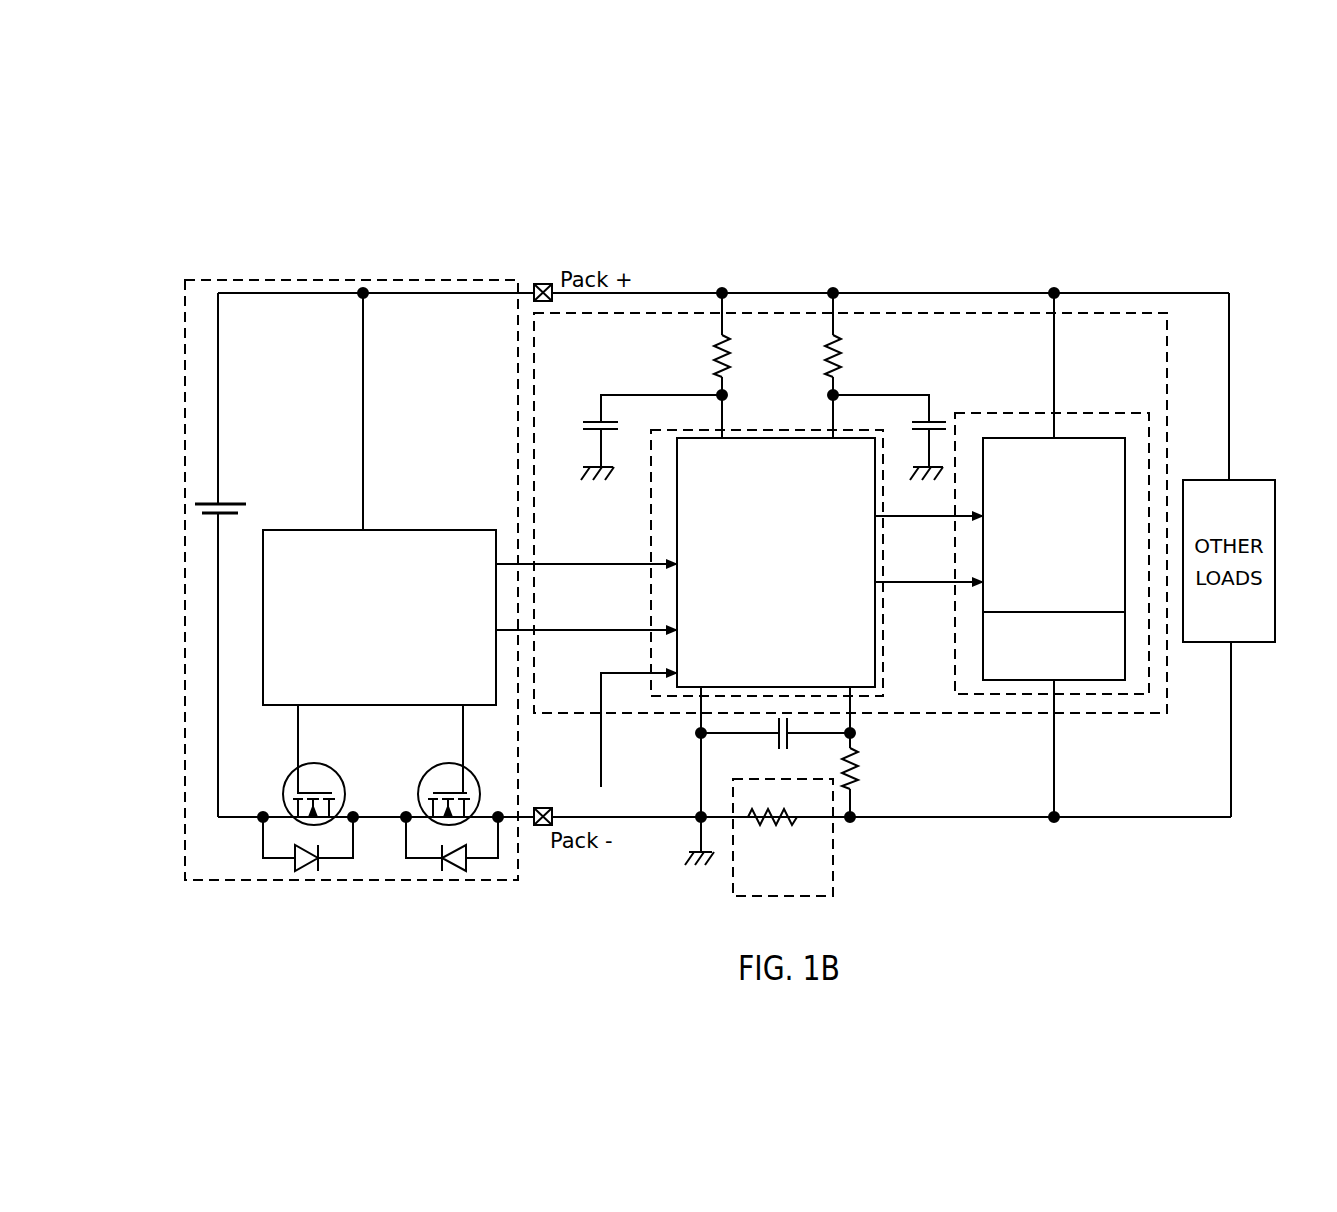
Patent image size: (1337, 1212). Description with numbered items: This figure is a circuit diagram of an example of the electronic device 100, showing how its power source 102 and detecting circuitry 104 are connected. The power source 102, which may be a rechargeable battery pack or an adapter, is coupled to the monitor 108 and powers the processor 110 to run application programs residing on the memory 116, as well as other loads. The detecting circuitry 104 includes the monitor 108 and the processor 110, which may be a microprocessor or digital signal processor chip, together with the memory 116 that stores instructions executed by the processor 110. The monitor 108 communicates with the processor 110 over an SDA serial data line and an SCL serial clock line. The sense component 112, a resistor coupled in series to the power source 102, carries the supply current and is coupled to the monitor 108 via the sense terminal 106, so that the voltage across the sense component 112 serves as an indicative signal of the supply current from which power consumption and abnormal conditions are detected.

The electronic device 100 is at (282, 224).
The power source 102 is at (397, 280).
The detecting circuitry 104 is at (1122, 713).
The sense terminal 106 is at (855, 815).
The monitor 108 is at (737, 428).
The processor 110 is at (1077, 413).
The sense component 112 is at (833, 883).
The memory 116 is at (1072, 673).